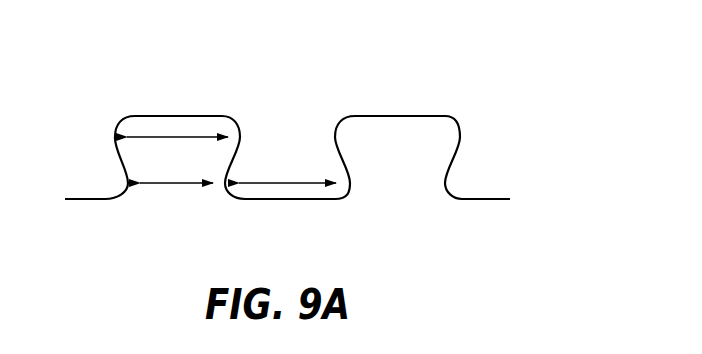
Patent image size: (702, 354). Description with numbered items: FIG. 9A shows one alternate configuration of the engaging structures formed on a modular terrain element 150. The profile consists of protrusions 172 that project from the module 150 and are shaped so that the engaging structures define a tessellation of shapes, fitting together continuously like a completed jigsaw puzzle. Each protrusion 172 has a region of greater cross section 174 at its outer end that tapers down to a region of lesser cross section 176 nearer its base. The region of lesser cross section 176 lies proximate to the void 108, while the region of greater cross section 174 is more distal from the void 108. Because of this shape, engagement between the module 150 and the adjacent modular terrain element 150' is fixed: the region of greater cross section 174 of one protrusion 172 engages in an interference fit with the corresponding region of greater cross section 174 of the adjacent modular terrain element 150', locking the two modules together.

The protrusion 172 is at (98, 135).
The region of greater cross section 174 is at (172, 137).
The region of lesser cross section 176 is at (177, 185).
The modular terrain element 150 is at (510, 144).
The void 108 is at (324, 259).
The adjacent modular terrain element 150' is at (458, 250).